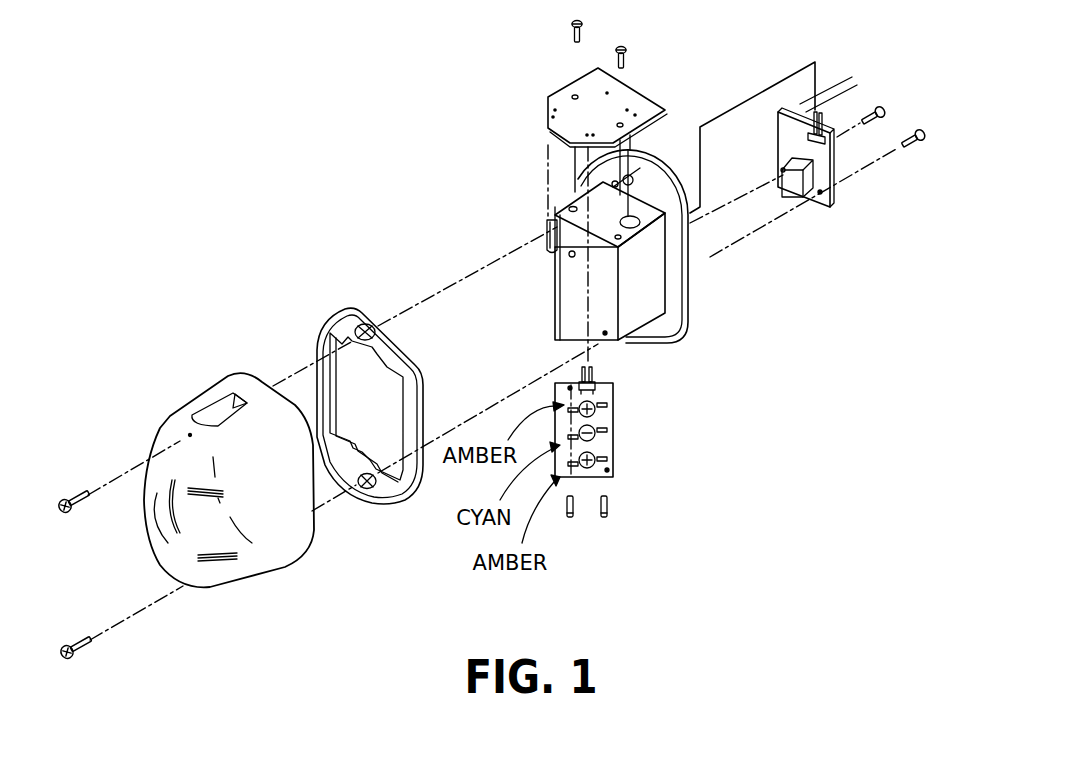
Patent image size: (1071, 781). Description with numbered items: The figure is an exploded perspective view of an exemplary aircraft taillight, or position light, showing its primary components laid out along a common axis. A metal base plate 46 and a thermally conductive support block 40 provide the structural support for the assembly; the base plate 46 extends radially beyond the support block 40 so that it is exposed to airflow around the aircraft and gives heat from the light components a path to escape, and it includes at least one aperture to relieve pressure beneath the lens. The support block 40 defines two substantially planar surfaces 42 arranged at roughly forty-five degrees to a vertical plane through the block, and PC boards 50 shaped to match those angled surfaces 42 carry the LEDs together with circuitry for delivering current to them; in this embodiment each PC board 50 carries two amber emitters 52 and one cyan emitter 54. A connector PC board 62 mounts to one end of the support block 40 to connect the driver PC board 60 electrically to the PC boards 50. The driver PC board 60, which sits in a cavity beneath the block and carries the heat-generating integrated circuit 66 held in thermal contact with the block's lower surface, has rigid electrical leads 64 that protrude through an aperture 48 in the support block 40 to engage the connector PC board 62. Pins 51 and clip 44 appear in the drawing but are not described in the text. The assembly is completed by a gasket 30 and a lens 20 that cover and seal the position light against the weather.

The lens 20 is at (155, 440).
The gasket 30 is at (343, 312).
The thermally conductive support block 40 is at (650, 300).
The planar surfaces 42 is at (580, 297).
The clip 44 is at (580, 227).
The metal base plate 46 is at (690, 237).
The aperture 48 is at (637, 216).
The PC boards 50 is at (595, 443).
The pins 51 is at (606, 520).
The amber LEDs 52 is at (577, 404).
The cyan LED 54 is at (593, 438).
The driver PC board 60 is at (832, 204).
The connector PC board 62 is at (546, 96).
The rigid electrical leads 64 is at (845, 110).
The integrated circuit 66 is at (782, 181).